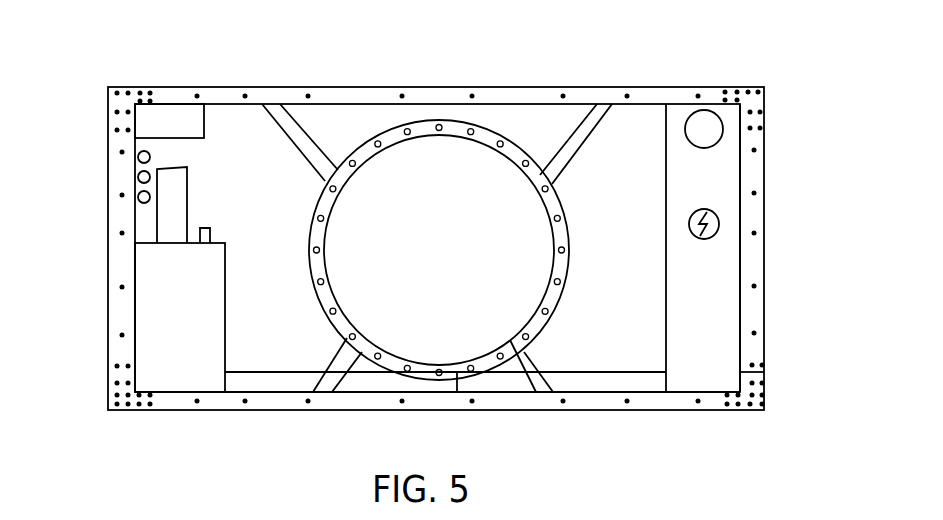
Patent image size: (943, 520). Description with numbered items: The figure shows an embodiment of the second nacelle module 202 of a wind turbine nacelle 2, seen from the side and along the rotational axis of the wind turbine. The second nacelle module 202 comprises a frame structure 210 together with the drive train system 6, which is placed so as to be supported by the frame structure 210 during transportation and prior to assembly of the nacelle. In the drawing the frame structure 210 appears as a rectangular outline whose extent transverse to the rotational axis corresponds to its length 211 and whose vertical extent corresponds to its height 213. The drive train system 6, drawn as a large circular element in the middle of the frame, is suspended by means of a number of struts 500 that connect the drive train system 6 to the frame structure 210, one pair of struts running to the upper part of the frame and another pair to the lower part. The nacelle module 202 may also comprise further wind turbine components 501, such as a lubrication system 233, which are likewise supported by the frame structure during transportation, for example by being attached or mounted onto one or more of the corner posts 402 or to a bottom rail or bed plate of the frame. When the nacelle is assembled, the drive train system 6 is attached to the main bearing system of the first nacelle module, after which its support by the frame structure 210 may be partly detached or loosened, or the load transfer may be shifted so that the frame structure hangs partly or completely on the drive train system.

The wind turbine nacelle 2 is at (358, 122).
The drive train system 6 is at (438, 121).
The second nacelle module 202 is at (678, 74).
The frame structure 210 is at (753, 308).
The length 211 is at (622, 398).
The height 213 is at (763, 365).
The lubrication system 233 is at (152, 345).
The corner posts 402 is at (126, 248).
The struts 500 is at (568, 145).
The further wind turbine components 501 is at (722, 273).